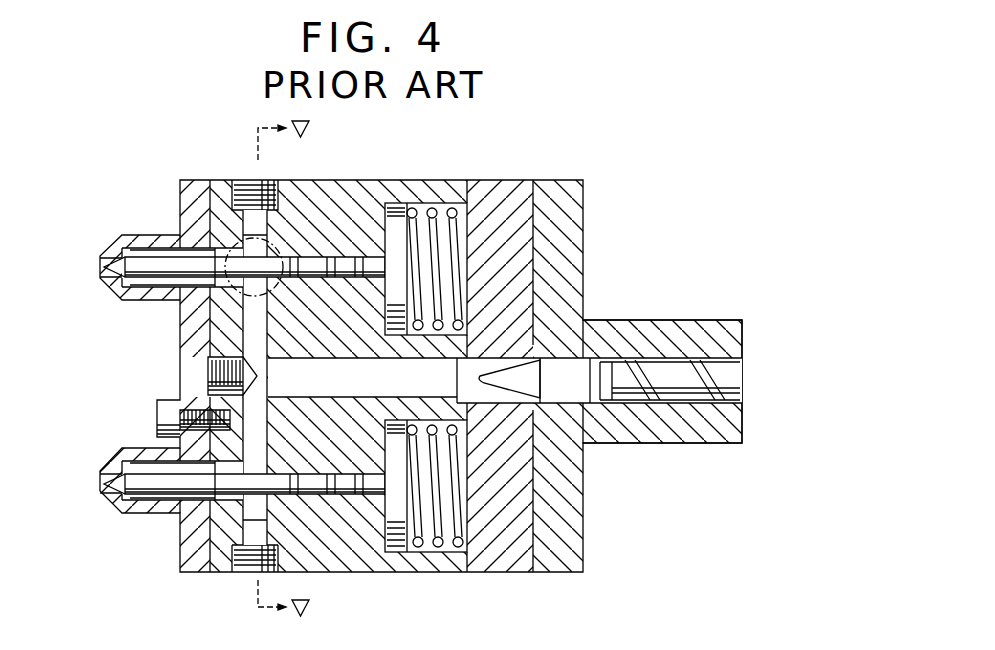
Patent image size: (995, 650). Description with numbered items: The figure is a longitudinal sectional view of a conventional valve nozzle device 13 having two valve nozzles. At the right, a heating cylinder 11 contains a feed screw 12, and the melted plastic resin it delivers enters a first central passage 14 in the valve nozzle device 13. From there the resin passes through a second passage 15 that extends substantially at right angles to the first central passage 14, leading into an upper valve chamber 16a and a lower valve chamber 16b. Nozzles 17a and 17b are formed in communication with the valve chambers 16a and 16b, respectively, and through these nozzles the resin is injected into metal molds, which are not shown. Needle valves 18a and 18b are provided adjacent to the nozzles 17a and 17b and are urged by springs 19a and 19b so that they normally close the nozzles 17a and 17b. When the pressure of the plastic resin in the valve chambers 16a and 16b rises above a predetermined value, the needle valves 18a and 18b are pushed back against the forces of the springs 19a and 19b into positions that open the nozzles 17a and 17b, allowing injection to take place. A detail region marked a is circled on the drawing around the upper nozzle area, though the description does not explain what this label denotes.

The heating cylinder 11 is at (651, 446).
The feed screw 12 is at (660, 365).
The valve nozzle device 13 is at (370, 574).
The first central passage 14 is at (325, 370).
The second passage 15 is at (256, 325).
The valve chamber 16a is at (166, 250).
The valve chamber 16b is at (150, 505).
The nozzle 17a is at (103, 267).
The nozzle 17b is at (103, 484).
The needle valve 18a is at (133, 262).
The needle valve 18b is at (146, 478).
The spring 19a is at (436, 210).
The spring 19b is at (438, 522).
The detail region a is at (232, 238).